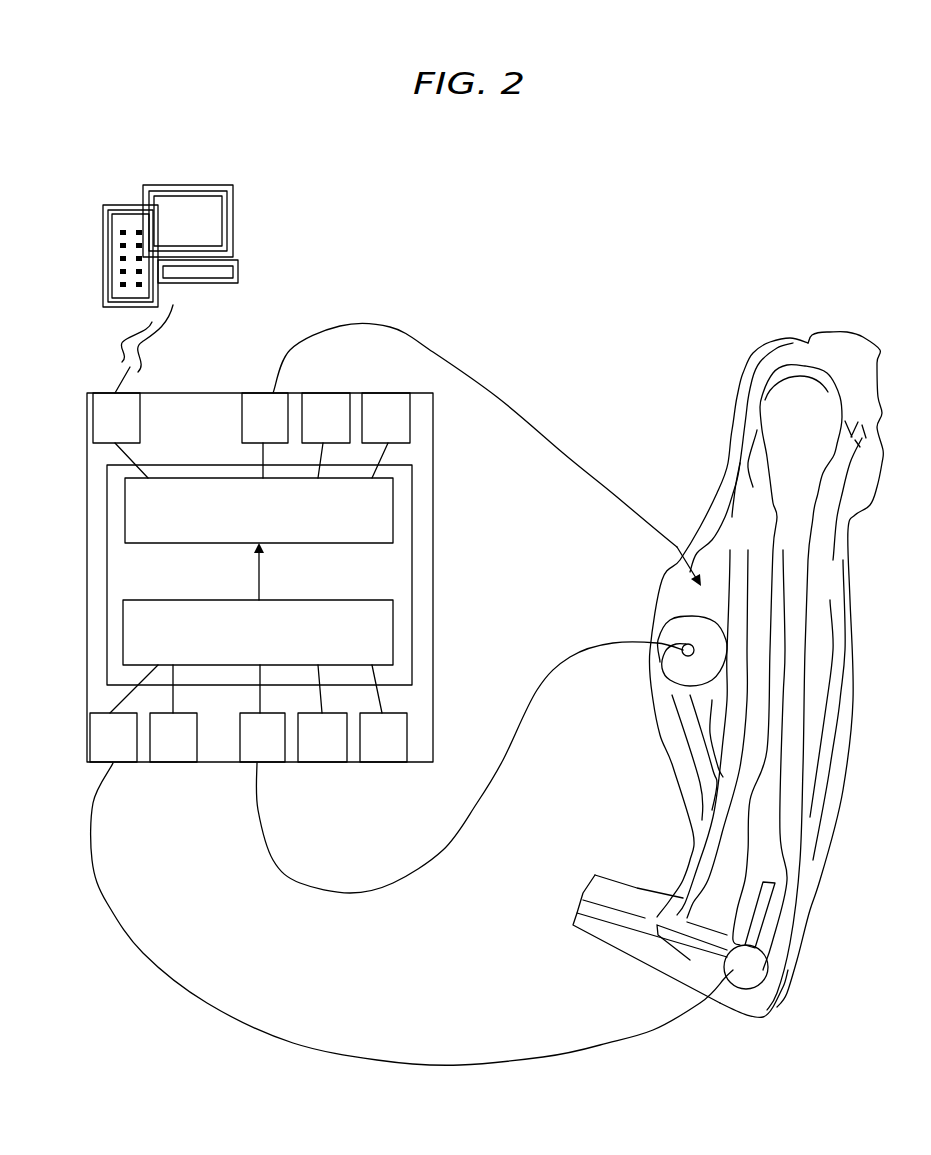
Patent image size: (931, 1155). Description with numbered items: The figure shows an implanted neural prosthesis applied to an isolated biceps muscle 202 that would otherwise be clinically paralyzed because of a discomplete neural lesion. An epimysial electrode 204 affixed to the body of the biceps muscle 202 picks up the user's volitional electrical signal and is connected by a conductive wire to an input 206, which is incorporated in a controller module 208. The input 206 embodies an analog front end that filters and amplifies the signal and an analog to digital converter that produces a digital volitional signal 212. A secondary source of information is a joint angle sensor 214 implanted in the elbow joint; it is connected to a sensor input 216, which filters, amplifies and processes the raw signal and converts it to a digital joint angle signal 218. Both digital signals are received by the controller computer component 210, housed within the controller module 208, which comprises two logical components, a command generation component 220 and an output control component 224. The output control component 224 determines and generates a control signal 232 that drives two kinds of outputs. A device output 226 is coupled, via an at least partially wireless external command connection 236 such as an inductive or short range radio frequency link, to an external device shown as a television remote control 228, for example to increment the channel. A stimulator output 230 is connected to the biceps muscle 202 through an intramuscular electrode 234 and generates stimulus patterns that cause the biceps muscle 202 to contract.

The biceps muscle 202 is at (730, 568).
The epimysial electrode 204 is at (672, 605).
The input I1 206 is at (246, 768).
The controller module 208 is at (440, 508).
The controller computer component 210 is at (402, 584).
The digital volitional signal 212 is at (258, 712).
The joint angle sensor 214 is at (750, 973).
The sensor input S1 216 is at (88, 753).
The digital joint angle signal 218 is at (110, 708).
The command generation component 220 is at (275, 644).
The output control component 224 is at (275, 522).
The device output A1 226 is at (93, 412).
The television remote control 228 is at (235, 204).
The stimulator output O1 230 is at (258, 393).
The control signal 232 is at (258, 462).
The intramuscular electrode 234 is at (677, 545).
The external command connection 236 is at (130, 345).